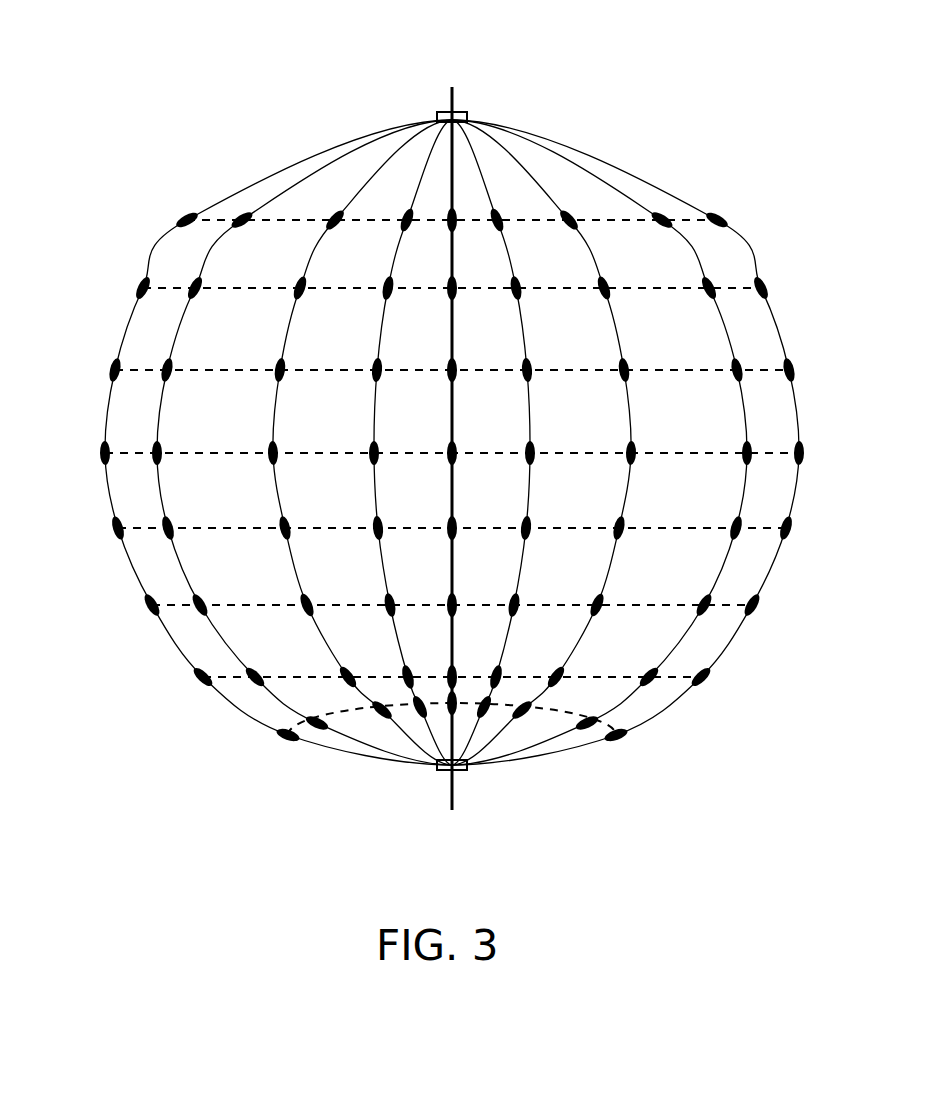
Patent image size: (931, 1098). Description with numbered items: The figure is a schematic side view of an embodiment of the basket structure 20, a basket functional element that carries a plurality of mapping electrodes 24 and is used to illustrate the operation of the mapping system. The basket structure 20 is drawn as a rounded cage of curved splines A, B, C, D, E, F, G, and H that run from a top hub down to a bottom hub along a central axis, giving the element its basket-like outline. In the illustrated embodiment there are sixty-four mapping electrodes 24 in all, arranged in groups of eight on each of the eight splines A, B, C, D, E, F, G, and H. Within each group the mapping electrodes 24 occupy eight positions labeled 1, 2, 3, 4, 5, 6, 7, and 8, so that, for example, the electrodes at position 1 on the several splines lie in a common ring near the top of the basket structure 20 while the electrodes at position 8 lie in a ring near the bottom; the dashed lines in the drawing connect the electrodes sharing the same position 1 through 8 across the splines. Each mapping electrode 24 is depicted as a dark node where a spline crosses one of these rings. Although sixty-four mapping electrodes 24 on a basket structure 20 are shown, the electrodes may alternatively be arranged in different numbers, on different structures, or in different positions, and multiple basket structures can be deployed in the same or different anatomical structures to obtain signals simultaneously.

The basket structure 20 is at (172, 86).
The mapping electrodes 24 is at (764, 286).
The electrode position one 1 is at (186, 219).
The electrode position two 2 is at (142, 287).
The electrode position three 3 is at (114, 369).
The electrode position four 4 is at (104, 452).
The electrode position five 5 is at (117, 530).
The electrode position six 6 is at (151, 607).
The electrode position seven 7 is at (202, 679).
The electrode position eight 8 is at (287, 737).
The spline A is at (480, 130).
The spline B is at (522, 150).
The spline C is at (597, 160).
The spline D is at (690, 193).
The spline E is at (432, 115).
The spline F is at (395, 115).
The spline G is at (285, 176).
The spline H is at (341, 208).